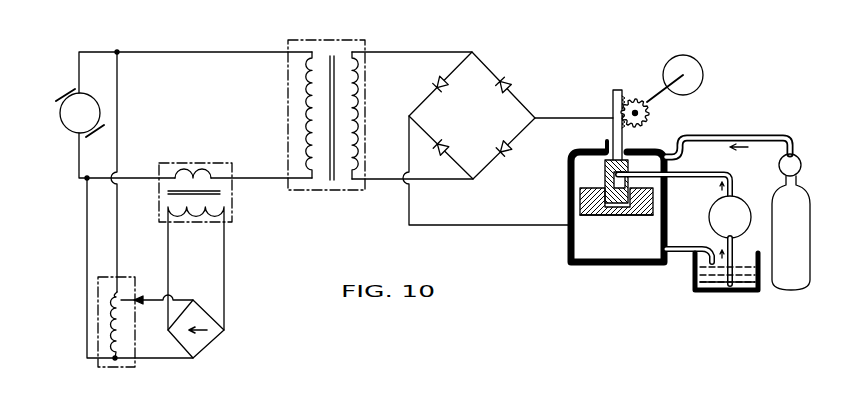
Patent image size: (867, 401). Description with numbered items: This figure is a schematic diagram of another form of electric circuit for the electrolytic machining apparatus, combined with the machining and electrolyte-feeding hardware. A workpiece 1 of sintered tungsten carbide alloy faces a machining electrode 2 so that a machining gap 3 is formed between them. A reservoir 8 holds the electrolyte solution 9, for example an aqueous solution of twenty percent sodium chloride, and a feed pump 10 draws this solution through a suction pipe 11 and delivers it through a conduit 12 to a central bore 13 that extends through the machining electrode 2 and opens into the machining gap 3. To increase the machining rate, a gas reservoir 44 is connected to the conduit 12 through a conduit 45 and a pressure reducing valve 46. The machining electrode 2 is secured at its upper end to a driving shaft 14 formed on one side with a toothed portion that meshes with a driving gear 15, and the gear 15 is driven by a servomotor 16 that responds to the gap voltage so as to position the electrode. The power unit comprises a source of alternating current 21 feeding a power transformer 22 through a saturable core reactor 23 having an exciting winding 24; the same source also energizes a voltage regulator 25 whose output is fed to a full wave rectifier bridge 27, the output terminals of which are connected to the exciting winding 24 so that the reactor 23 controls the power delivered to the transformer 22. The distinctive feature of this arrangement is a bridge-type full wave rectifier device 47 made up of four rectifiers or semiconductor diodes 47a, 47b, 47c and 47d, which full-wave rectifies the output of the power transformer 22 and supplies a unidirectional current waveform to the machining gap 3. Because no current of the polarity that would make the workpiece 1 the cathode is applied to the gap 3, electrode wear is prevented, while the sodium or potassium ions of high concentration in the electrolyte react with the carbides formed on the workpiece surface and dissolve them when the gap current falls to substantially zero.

The workpiece 1 is at (632, 216).
The machining electrode 2 is at (602, 160).
The machining gap 3 is at (607, 216).
The reservoir 8 is at (712, 293).
The electrolyte solution 9 is at (738, 293).
The feed pump 10 is at (709, 218).
The suction pipe 11 is at (748, 258).
The conduit 12 is at (676, 180).
The central bore 13 is at (605, 174).
The driving shaft 14 is at (613, 102).
The driving gear 15 is at (647, 115).
The servomotor 16 is at (672, 59).
The source of alternating current 21 is at (61, 118).
The power transformer 22 is at (342, 34).
The saturable core reactor 23 is at (206, 156).
The exciting winding 24 is at (200, 216).
The voltage regulator 25 is at (127, 392).
The full wave rectifier bridge 27 is at (238, 359).
The gas reservoir 44 is at (791, 233).
The conduit 45 is at (757, 133).
The pressure reducing valve 46 is at (801, 165).
The rectifier device 47 is at (483, 124).
The diode 47a is at (436, 80).
The diode 47b is at (511, 86).
The diode 47c is at (447, 148).
The diode 47d is at (508, 152).